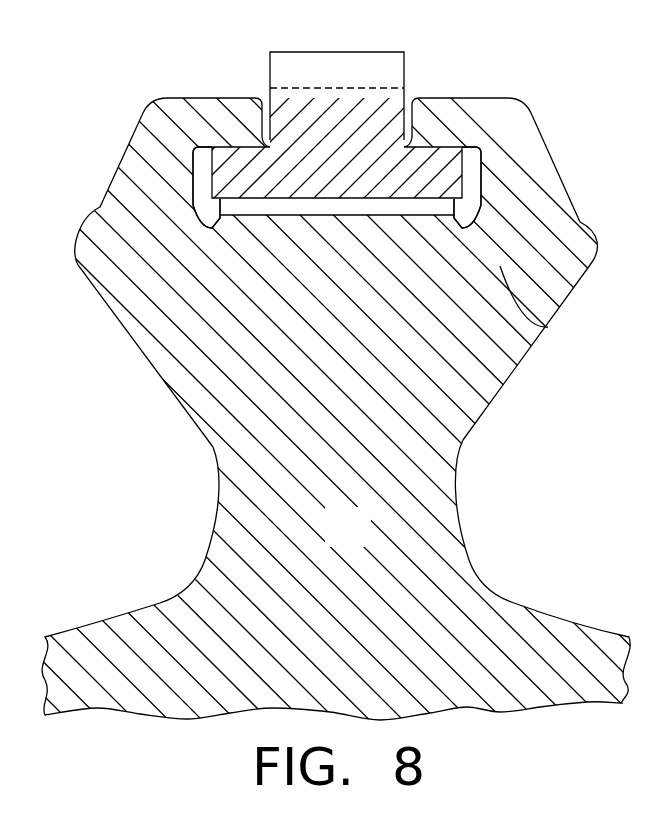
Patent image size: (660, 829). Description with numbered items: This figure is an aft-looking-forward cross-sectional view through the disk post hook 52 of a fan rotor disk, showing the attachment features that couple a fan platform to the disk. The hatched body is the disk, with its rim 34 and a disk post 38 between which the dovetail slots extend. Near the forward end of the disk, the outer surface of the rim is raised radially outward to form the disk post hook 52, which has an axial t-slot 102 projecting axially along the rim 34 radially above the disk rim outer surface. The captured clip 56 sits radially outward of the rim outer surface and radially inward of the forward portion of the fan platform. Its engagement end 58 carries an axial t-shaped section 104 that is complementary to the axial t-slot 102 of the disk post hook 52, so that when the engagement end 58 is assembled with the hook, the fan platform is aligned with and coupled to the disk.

The rim 34 is at (366, 541).
The disk post 38 is at (243, 410).
The disk post hook 52 is at (153, 180).
The captured clip 56 is at (268, 70).
The engagement end 58 is at (390, 80).
The axial t-slot 102 is at (478, 218).
The axial t-shaped section 104 is at (548, 327).